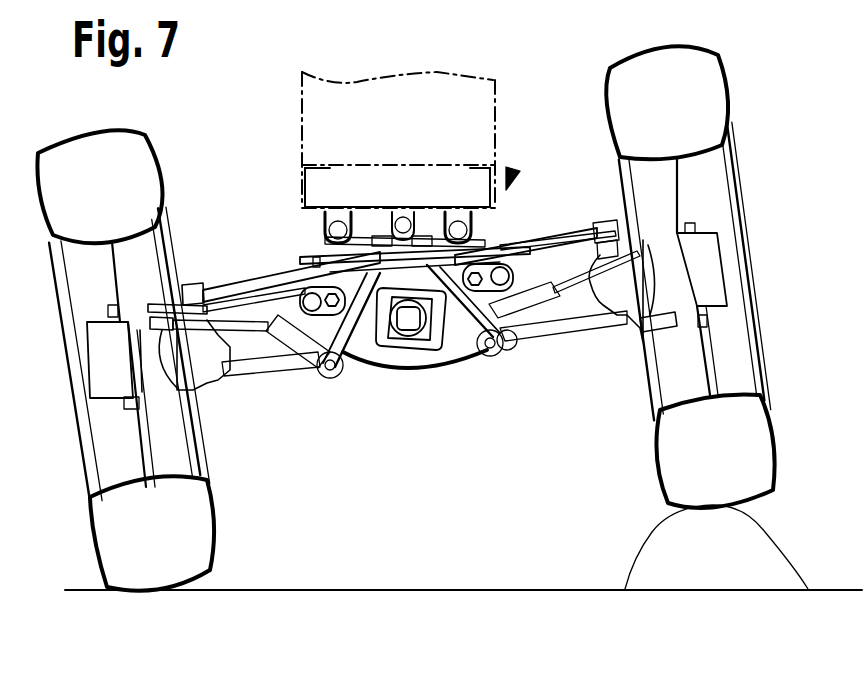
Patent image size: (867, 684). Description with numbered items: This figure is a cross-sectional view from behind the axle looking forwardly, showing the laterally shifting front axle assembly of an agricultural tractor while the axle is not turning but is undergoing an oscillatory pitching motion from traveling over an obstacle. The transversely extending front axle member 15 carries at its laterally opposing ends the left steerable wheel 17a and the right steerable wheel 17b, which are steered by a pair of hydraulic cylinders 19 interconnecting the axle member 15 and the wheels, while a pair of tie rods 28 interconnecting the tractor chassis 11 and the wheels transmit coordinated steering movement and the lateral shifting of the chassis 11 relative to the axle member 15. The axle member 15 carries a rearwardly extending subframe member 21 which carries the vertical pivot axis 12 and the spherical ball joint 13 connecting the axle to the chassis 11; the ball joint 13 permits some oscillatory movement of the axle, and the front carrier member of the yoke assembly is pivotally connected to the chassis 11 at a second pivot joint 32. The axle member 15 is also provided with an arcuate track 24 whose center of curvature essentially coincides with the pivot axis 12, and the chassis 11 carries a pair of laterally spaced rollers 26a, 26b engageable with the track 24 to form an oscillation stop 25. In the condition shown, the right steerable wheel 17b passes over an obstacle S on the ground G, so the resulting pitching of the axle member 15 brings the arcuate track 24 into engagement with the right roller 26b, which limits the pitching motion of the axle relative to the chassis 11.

The tractor chassis 11 is at (433, 72).
The vertical pivot axis 12 is at (392, 240).
The spherical ball joint 13 is at (380, 217).
The second pivot joint 32 is at (407, 220).
The oscillation stop 25 is at (513, 170).
The left roller 26a is at (307, 247).
The right roller 26b is at (497, 227).
The tie rods 28 is at (272, 290).
The arcuate track 24 is at (280, 293).
The hydraulic cylinders 19 is at (270, 327).
The subframe member 21 is at (298, 345).
The front axle member 15 is at (561, 315).
The left steerable wheel 17a is at (213, 547).
The right steerable wheel 17b is at (658, 473).
The ground G is at (400, 590).
The obstacle S is at (640, 552).